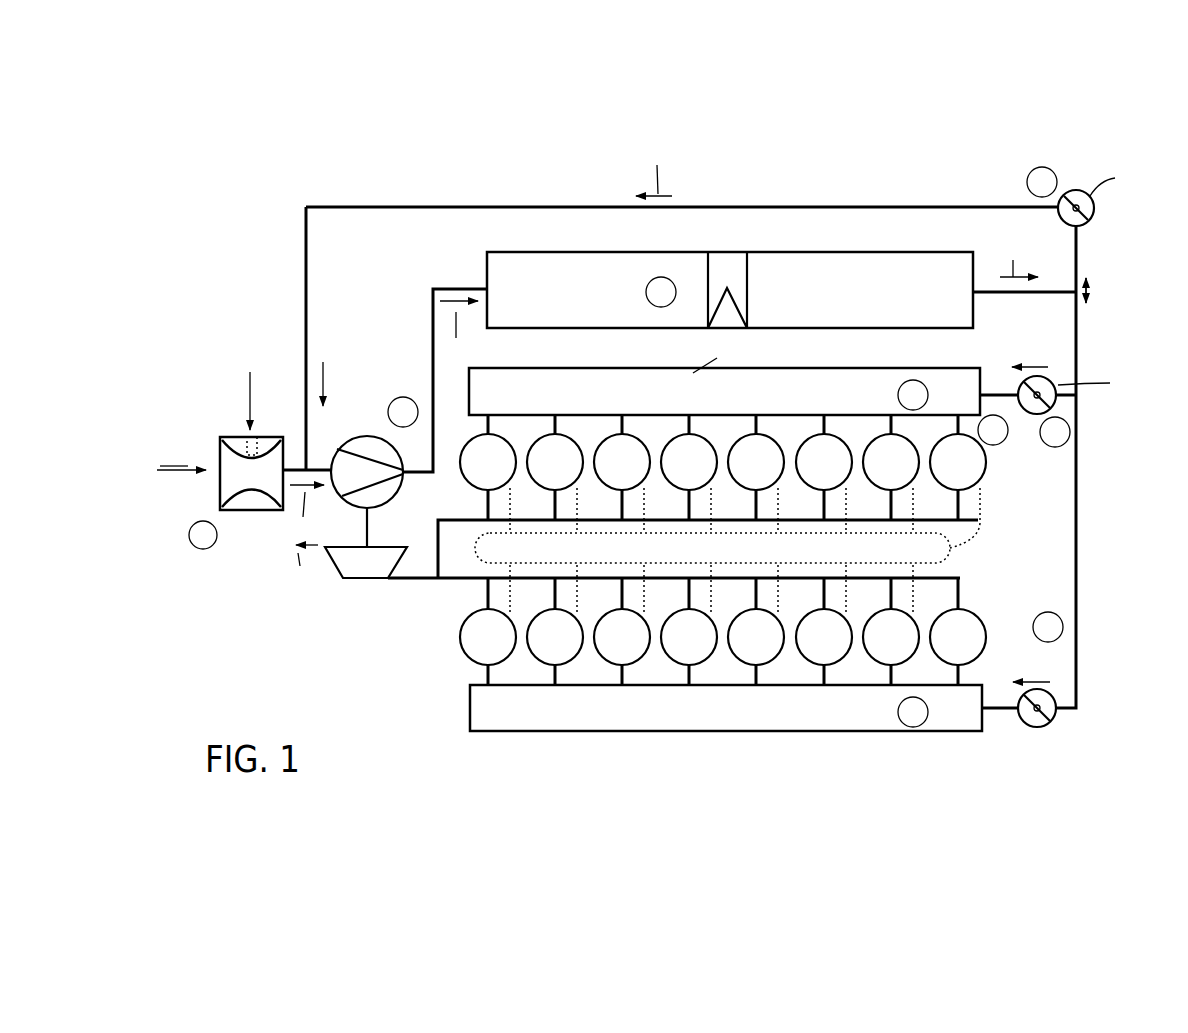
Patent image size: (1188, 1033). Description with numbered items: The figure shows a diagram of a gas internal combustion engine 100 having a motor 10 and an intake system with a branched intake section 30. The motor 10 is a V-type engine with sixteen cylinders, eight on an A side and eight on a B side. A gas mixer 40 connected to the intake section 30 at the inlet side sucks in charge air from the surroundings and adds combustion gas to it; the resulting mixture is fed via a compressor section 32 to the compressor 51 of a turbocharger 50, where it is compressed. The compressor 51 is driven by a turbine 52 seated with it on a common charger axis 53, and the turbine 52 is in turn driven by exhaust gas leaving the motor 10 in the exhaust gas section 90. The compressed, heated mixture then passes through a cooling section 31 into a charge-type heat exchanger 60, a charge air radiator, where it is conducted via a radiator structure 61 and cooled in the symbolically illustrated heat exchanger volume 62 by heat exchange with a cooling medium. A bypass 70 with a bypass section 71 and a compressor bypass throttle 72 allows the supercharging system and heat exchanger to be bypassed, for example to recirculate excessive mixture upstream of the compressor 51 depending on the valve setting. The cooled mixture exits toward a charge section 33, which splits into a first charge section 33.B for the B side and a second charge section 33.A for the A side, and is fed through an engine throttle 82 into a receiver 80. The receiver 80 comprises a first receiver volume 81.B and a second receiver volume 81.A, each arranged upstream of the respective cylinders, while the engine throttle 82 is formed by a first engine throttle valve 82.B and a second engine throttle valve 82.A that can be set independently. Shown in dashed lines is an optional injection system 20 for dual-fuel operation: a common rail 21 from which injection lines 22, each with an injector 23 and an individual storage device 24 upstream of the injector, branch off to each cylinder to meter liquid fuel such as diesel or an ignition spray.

The motor 10 is at (978, 548).
The injection system 20 is at (950, 557).
The common rail 21 is at (486, 558).
The injection lines 22 is at (512, 510).
The injector 23 is at (485, 490).
The individual storage device 24 is at (498, 486).
The intake section 30 is at (386, 180).
The cooling section 31 is at (460, 287).
The compressor section 32 is at (323, 468).
The charge section 33 is at (1080, 351).
The second charge section 33.A is at (1005, 714).
The first charge section 33.B is at (996, 392).
The gas mixer 40 is at (221, 437).
The turbocharger 50 is at (332, 576).
The compressor 51 is at (370, 468).
The turbine 52 is at (371, 576).
The charger axis 53 is at (372, 527).
The charge-type heat exchanger 60 is at (889, 247).
The radiator structure 61 is at (748, 252).
The heat exchanger volume 62 is at (580, 304).
The bypass 70 is at (789, 204).
The bypass section 71 is at (878, 205).
The compressor bypass throttle 72 is at (1095, 215).
The receiver 80 is at (590, 388).
The second receiver volume 81.A is at (940, 735).
The first receiver volume 81.B is at (848, 373).
The engine throttle 82 is at (1097, 497).
The second engine throttle valve 82.A is at (1062, 727).
The first engine throttle valve 82.B is at (1018, 424).
The exhaust gas section 90 is at (395, 580).
The gas internal combustion engine 100 is at (1072, 166).